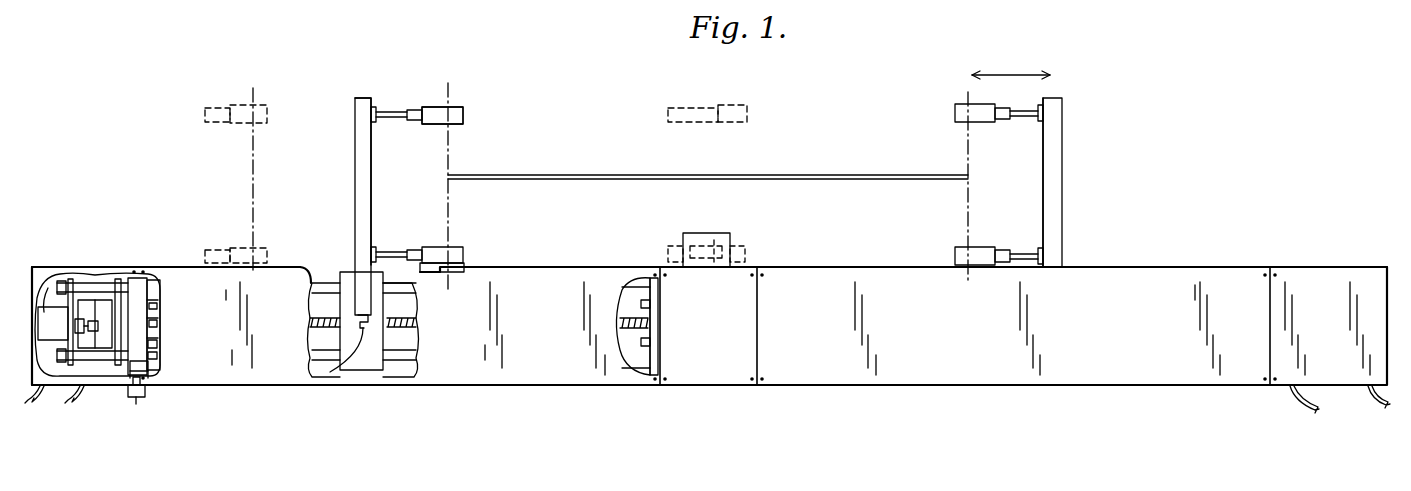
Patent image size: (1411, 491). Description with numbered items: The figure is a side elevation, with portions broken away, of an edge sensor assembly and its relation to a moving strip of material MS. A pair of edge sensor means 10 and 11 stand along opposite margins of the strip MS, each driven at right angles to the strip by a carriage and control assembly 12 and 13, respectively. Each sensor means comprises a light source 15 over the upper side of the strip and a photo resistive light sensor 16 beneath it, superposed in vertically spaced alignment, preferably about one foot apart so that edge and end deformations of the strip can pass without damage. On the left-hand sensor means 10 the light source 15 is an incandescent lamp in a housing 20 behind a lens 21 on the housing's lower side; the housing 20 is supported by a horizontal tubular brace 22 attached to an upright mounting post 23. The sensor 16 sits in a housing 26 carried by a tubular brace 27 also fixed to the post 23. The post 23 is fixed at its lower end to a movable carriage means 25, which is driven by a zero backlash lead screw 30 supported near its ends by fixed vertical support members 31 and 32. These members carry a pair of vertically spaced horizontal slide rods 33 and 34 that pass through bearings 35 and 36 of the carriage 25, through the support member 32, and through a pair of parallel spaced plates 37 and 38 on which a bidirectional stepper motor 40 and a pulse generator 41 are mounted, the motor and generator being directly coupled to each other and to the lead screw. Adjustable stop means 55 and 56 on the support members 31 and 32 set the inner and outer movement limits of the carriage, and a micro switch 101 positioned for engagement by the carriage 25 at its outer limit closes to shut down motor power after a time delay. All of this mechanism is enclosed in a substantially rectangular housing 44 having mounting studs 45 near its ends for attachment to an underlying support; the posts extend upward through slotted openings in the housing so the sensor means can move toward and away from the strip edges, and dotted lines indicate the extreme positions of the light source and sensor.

The edge sensor means 10 is at (353, 184).
The edge sensor means 11 is at (1066, 104).
The carriage and control assembly 12 is at (172, 263).
The carriage and control assembly 13 is at (1157, 262).
The light source 15 is at (469, 126).
The photo resistive light sensor 16 is at (463, 248).
The housing 20 is at (463, 110).
The lens 21 is at (446, 124).
The tubular brace 22 is at (395, 108).
The mounting post 23 is at (352, 101).
The carriage means 25 is at (366, 374).
The housing 26 is at (462, 265).
The tubular brace 27 is at (395, 248).
The lead screw 30 is at (320, 332).
The support member 31 is at (656, 331).
The support member 32 is at (142, 310).
The slide rod 33 is at (318, 285).
The slide rod 34 is at (404, 360).
The bearing 35 is at (392, 290).
The bearing 36 is at (392, 362).
The plate 37 is at (128, 280).
The plate 38 is at (68, 296).
The bidirectional stepper motor 40 is at (55, 330).
The pulse generator 41 is at (102, 331).
The housing 44 is at (542, 389).
The mounting stud 45 is at (178, 423).
The adjustable stop means 55 is at (650, 304).
The adjustable stop means 56 is at (158, 344).
The micro switch 101 is at (160, 366).
The moving strip MS is at (797, 174).